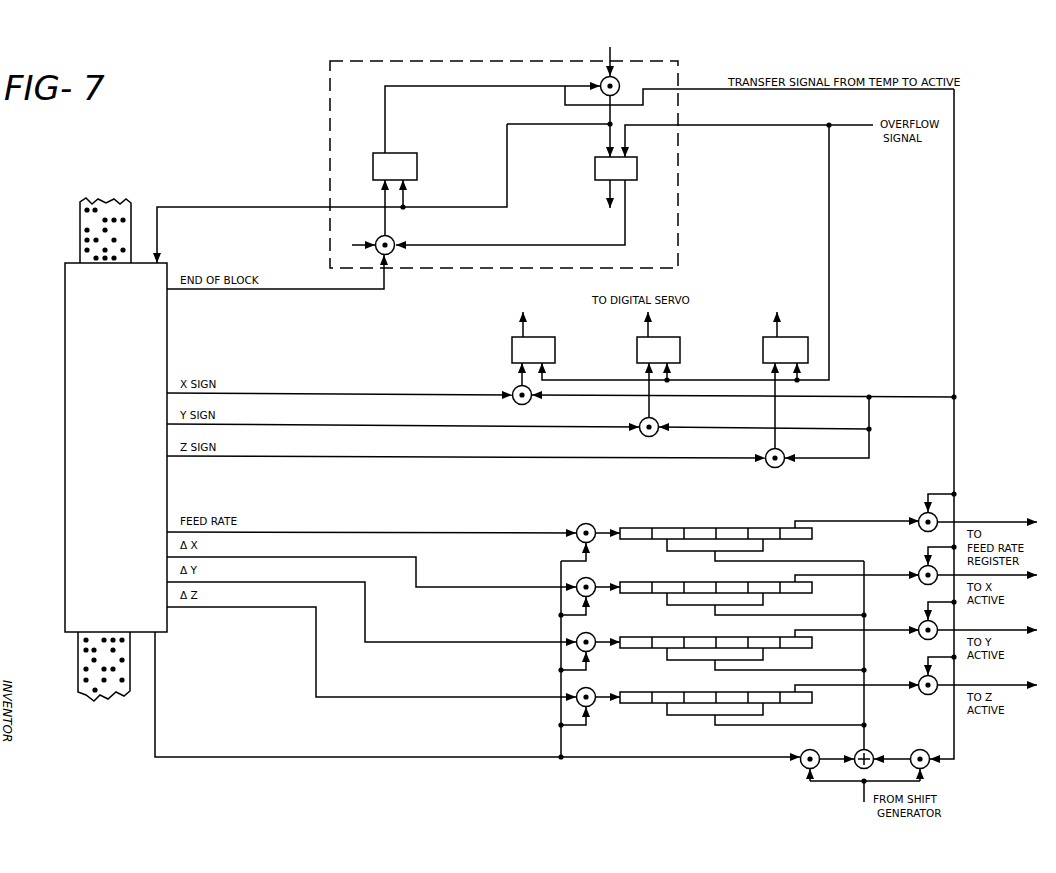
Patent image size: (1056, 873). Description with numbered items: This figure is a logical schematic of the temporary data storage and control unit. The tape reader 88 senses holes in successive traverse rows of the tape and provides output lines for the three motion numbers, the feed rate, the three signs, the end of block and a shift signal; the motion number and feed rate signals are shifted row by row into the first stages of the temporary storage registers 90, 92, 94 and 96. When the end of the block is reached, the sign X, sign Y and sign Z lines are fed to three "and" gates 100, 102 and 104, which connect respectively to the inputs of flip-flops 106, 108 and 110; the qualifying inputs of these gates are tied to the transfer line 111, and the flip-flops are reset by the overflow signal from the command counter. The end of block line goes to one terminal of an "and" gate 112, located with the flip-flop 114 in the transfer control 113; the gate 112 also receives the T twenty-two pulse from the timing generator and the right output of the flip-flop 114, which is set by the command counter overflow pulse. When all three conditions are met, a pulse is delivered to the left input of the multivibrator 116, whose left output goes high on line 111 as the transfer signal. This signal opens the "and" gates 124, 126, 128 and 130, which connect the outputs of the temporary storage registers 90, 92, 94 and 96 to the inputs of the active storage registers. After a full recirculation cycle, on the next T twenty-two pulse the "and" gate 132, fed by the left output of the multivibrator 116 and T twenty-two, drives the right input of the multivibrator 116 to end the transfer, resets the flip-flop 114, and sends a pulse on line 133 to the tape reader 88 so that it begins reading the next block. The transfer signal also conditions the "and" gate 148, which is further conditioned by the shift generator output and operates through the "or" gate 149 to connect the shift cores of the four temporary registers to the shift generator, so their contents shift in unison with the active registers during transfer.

The tape reader 88 is at (65, 424).
The temporary storage register 90 is at (648, 540).
The temporary storage register 92 is at (648, 594).
The temporary storage register 94 is at (648, 649).
The temporary storage register 96 is at (648, 704).
The "and" gate 100 is at (530, 403).
The "and" gate 102 is at (656, 435).
The "and" gate 104 is at (782, 466).
The flip-flop 106 is at (514, 338).
The flip-flop 108 is at (637, 343).
The flip-flop 110 is at (765, 343).
The transfer line 111 is at (954, 241).
The "and" gate 112 is at (392, 238).
The transfer control 113 is at (420, 58).
The flip-flop 114 is at (637, 158).
The multivibrator 116 is at (397, 153).
The "and" gate 124 is at (920, 515).
The "and" gate 126 is at (920, 568).
The "and" gate 128 is at (920, 623).
The "and" gate 130 is at (920, 678).
The "and" gate 132 is at (625, 69).
The line 133 is at (217, 207).
The "and" gate 148 is at (929, 766).
The "or" gate 149 is at (872, 748).